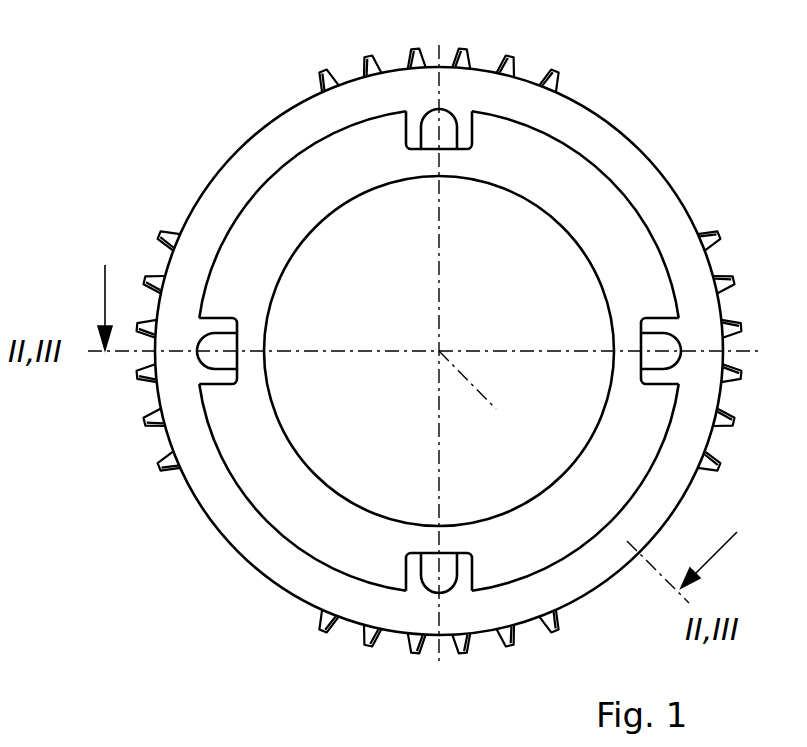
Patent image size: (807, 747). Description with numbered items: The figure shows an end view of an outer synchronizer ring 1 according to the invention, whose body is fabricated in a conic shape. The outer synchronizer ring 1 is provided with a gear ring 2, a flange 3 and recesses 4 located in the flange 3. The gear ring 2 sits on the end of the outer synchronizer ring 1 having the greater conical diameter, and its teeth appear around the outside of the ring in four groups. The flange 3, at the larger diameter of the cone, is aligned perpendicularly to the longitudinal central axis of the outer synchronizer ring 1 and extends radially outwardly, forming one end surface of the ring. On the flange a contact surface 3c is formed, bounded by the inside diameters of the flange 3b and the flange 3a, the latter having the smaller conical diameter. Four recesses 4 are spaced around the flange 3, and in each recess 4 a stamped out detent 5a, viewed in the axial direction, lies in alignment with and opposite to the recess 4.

The outer synchronizer ring 1 is at (649, 84).
The gear ring 2 is at (322, 80).
The flange 3 is at (479, 319).
The flange 3a is at (562, 224).
The flange 3b is at (552, 126).
The contact surface 3c is at (496, 341).
The recesses 4 is at (463, 108).
The stamped out detent 5a is at (450, 140).